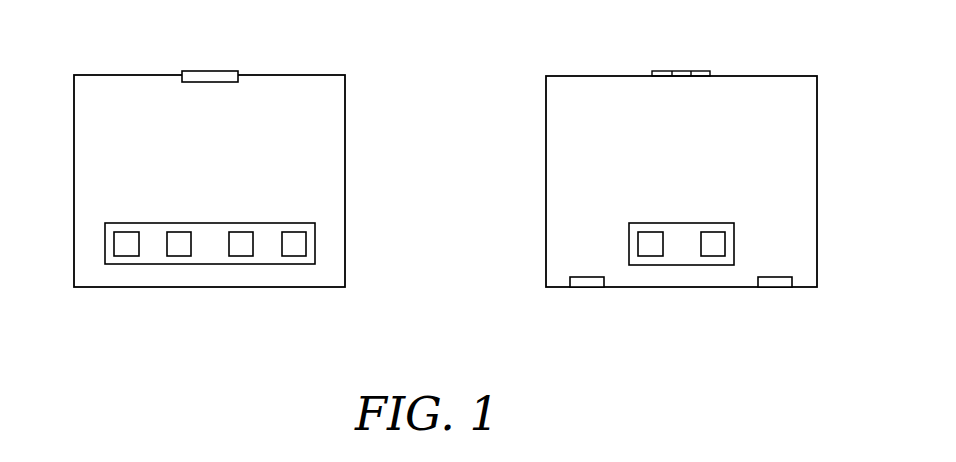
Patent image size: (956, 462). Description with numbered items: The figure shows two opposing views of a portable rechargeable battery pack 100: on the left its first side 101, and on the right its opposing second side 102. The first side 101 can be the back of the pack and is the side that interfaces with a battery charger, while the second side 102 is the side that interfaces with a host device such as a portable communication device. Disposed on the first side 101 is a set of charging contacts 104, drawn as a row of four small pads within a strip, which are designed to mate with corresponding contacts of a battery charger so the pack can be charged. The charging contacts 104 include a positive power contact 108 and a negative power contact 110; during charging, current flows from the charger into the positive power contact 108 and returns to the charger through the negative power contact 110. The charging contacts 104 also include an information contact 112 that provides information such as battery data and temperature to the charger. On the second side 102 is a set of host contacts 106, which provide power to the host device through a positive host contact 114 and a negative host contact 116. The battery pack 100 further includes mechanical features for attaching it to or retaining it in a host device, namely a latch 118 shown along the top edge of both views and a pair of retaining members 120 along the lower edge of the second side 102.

The portable rechargeable battery pack 100 is at (355, 130).
The first side 101 is at (103, 75).
The second side 102 is at (600, 76).
The charging contacts 104 is at (165, 223).
The host contacts 106 is at (637, 223).
The positive power contact 108 is at (127, 256).
The negative power contact 110 is at (293, 256).
The information contact 112 is at (178, 256).
The positive host contact 114 is at (649, 256).
The negative host contact 116 is at (712, 256).
The latch 118 is at (210, 71).
The retaining members 120 is at (589, 287).